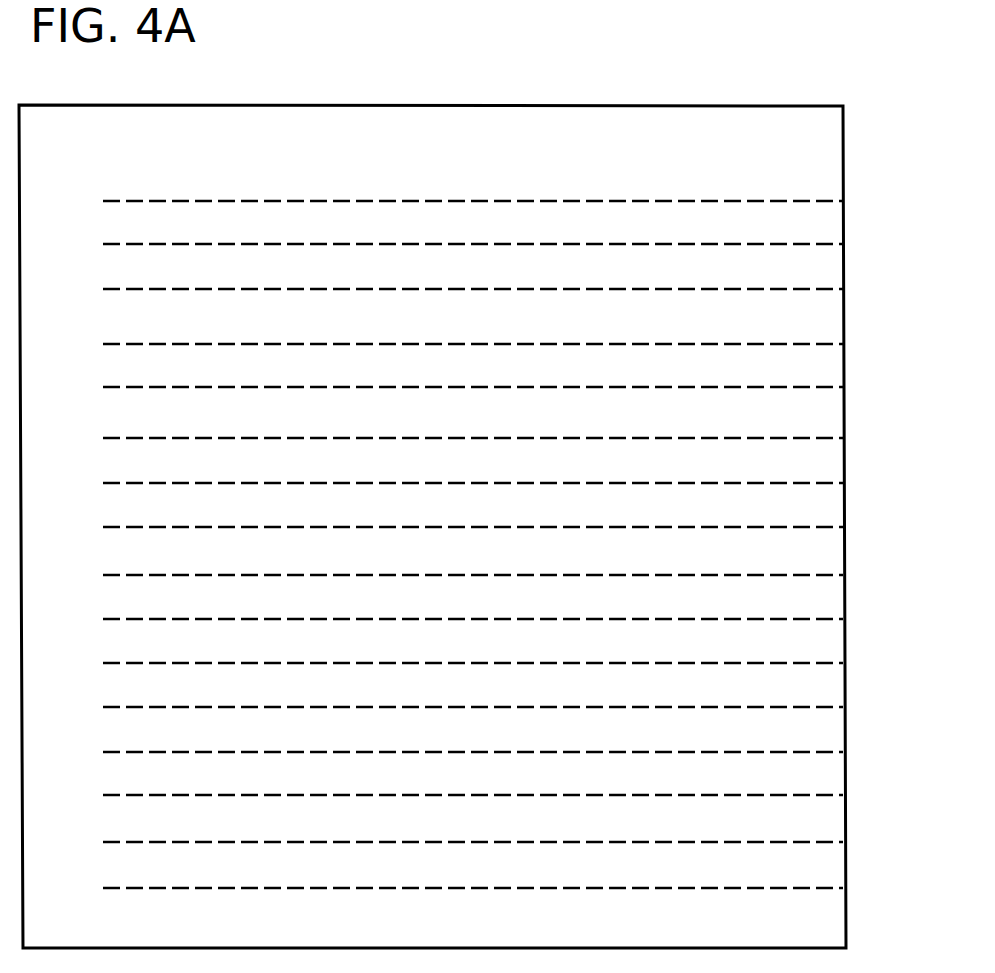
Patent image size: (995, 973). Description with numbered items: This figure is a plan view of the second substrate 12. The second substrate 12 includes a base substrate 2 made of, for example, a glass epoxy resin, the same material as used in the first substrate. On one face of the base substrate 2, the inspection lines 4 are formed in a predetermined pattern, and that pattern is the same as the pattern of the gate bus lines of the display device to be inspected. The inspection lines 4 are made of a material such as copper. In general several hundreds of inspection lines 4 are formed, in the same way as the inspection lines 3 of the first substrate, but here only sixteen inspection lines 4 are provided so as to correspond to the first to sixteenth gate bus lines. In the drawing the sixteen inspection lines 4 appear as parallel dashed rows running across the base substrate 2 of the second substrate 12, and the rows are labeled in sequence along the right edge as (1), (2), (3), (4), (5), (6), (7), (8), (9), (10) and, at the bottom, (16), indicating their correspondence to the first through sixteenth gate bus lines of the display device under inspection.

The inspection lines 4 is at (293, 200).
The second substrate 12 is at (432, 480).
The scanning line row 1 is at (495, 201).
The base substrate 2 is at (496, 244).
The inspection lines 3 is at (496, 289).
The scanning line row 5 is at (496, 387).
The scanning line row 6 is at (496, 438).
The scanning line row 7 is at (496, 483).
The scanning line row 8 is at (496, 527).
The scanning line row 9 is at (496, 575).
The scanning line row 10 is at (504, 619).
The scanning line row 16 is at (504, 888).